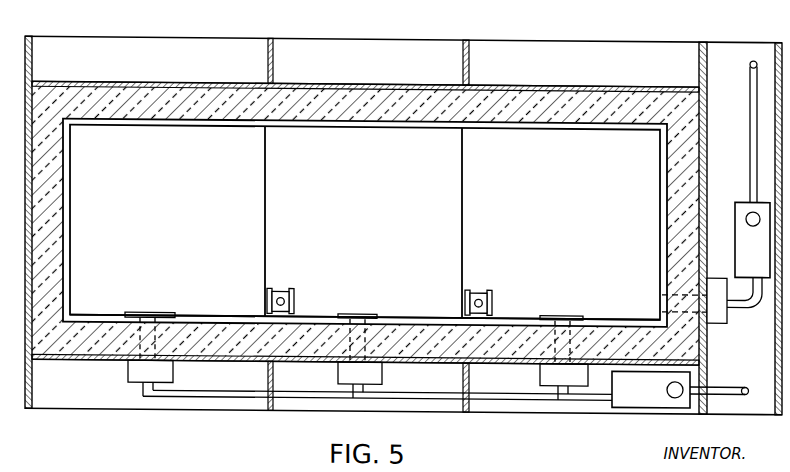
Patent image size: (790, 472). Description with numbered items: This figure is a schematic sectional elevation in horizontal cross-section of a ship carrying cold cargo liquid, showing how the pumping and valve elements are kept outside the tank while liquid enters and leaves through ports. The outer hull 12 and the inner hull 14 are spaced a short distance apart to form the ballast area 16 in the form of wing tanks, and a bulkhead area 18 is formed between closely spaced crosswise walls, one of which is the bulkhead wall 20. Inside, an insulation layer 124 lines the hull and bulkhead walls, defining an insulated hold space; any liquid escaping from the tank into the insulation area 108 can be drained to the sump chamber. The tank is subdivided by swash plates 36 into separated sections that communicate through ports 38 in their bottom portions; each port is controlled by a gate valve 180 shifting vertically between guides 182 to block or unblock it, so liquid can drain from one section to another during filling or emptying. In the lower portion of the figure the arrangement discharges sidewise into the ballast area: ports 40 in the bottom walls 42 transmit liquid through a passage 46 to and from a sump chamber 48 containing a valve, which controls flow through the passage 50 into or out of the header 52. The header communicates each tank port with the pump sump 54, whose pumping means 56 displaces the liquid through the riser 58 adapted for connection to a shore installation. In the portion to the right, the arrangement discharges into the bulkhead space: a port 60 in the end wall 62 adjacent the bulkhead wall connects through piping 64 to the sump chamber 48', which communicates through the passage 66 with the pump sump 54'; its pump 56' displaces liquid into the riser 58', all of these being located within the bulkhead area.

The outer hull 12 is at (205, 42).
The inner hull 14 is at (118, 80).
The ballast area 16 is at (386, 57).
The bulkhead area 18 is at (722, 58).
The bulkhead wall 20 is at (707, 112).
The swash plates 36 is at (268, 192).
The ports 38 is at (389, 284).
The ports 40 is at (146, 311).
The bottom walls 42 is at (196, 314).
The passage 46 is at (158, 338).
The sump chamber 48 is at (331, 375).
The sump chamber 48' is at (730, 319).
The passage 50 is at (141, 388).
The header 52 is at (234, 397).
The pump sump 54 is at (651, 408).
The pump sump 54' is at (739, 240).
The pumping means 56 is at (681, 412).
The pump 56' is at (736, 201).
The riser 58 is at (723, 414).
The riser 58' is at (734, 132).
The port 60 is at (654, 296).
The end wall 62 is at (71, 224).
The piping 64 is at (681, 288).
The passage 66 is at (746, 302).
The insulation area 108 is at (182, 124).
The insulation layer 124 is at (415, 332).
The gate valve 180 is at (278, 288).
The guides 182 is at (294, 300).